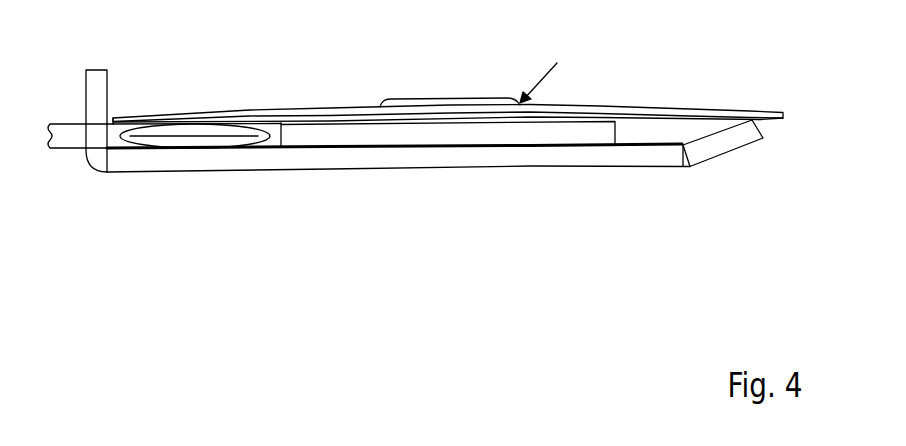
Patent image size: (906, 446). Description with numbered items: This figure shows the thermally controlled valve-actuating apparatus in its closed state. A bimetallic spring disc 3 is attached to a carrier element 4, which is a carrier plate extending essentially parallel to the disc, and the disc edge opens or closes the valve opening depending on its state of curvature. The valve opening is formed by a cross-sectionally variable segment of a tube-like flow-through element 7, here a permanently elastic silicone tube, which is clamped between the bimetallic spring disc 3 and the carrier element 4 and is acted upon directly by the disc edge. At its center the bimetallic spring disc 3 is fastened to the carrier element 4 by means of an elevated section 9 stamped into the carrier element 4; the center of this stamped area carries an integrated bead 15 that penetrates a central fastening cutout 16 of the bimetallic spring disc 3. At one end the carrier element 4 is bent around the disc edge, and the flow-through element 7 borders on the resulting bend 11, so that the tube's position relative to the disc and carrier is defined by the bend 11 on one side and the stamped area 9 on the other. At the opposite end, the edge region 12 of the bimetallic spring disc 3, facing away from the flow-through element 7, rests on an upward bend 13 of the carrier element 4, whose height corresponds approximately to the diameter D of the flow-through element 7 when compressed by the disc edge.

The bimetallic spring disc 3 is at (657, 108).
The carrier element 4 is at (648, 154).
The flow-through element 7 is at (218, 140).
The elevated section 9 is at (507, 127).
The bend 11 is at (97, 88).
The edge region 12 is at (763, 122).
The upward bend 13 is at (717, 147).
The integrated bead 15 is at (470, 100).
The central fastening cutout 16 is at (559, 66).
The diameter D is at (62, 136).